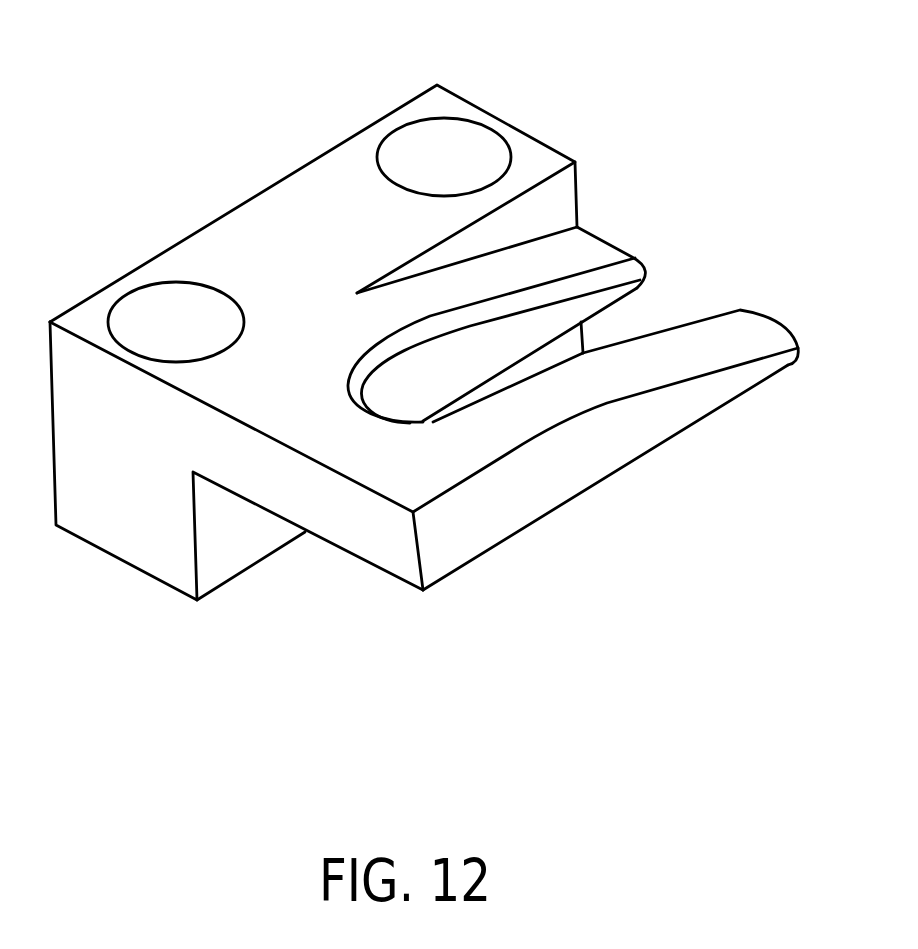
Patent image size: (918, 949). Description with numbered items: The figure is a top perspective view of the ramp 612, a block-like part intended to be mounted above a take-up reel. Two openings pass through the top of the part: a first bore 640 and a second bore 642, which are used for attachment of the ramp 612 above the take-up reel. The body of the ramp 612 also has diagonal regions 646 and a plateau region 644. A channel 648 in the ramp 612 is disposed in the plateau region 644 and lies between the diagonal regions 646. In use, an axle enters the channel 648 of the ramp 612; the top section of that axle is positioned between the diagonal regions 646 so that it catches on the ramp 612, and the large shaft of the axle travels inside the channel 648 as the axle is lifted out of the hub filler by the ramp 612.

The ramp 612 is at (137, 542).
The first bore 640 is at (163, 358).
The second bore 642 is at (462, 145).
The plateau region 644 is at (490, 448).
The diagonal regions 646 is at (588, 252).
The channel 648 is at (647, 315).